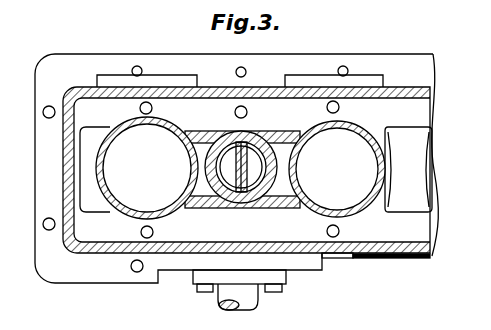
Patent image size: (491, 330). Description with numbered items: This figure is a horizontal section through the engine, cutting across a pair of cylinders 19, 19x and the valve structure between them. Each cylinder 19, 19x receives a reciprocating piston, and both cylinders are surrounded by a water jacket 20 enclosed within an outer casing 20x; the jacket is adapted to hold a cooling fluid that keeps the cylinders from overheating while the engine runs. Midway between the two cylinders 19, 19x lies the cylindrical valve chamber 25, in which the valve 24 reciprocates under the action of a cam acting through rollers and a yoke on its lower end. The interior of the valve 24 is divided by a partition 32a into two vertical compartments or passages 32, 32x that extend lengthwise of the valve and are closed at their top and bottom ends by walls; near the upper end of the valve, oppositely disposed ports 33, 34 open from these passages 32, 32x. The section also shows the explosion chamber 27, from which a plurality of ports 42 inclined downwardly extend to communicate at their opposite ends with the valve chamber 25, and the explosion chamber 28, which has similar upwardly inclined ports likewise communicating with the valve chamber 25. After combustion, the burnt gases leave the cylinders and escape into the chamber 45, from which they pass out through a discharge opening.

The cylinder 19 is at (157, 121).
The cylinder 19x is at (362, 128).
The water jacket 20 is at (401, 257).
The outer casing 20x is at (335, 255).
The valve 24 is at (226, 133).
The valve chamber 25 is at (285, 198).
The explosion chamber 27 is at (130, 204).
The explosion chamber 28 is at (354, 204).
The passage 32 is at (215, 208).
The partition 32a is at (251, 140).
The passage 32x is at (256, 208).
The port 33 is at (203, 132).
The port 34 is at (285, 134).
The port 42 is at (180, 142).
The chamber 45 is at (258, 300).